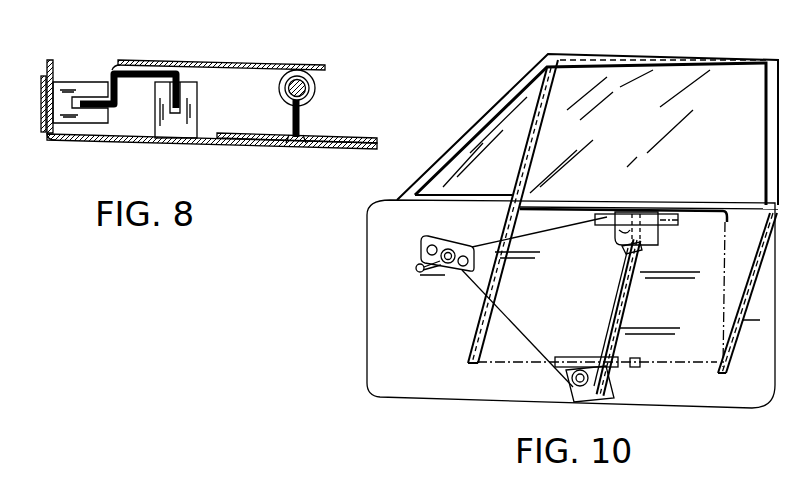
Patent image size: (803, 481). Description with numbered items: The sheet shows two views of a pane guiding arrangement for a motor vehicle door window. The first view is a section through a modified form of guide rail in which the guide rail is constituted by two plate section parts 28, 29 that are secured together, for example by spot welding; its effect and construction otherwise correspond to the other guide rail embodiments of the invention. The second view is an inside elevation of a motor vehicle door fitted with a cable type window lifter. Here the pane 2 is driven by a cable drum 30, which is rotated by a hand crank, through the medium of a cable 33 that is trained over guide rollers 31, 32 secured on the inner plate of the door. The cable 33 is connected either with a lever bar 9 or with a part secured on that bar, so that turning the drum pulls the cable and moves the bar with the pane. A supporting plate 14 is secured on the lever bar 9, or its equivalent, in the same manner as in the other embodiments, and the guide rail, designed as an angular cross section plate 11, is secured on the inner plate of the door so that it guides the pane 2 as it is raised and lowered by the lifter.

In FIG. 10, the pane 2 is at (680, 77).
In FIG. 10, the lever bar 9 is at (670, 227).
In FIG. 10, the angular cross section plate 11 is at (631, 297).
In FIG. 10, the supporting plate 14 is at (627, 248).
In FIG. 8, the plate section part 28 is at (232, 62).
In FIG. 8, the plate section part 29 is at (118, 71).
In FIG. 10, the cable drum 30 is at (478, 248).
In FIG. 10, the guide roller 31 is at (615, 235).
In FIG. 10, the guide roller 32 is at (570, 374).
In FIG. 10, the cable 33 is at (521, 331).